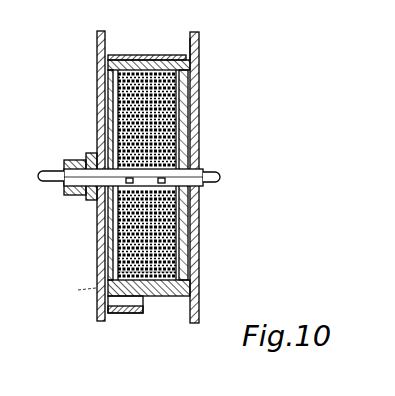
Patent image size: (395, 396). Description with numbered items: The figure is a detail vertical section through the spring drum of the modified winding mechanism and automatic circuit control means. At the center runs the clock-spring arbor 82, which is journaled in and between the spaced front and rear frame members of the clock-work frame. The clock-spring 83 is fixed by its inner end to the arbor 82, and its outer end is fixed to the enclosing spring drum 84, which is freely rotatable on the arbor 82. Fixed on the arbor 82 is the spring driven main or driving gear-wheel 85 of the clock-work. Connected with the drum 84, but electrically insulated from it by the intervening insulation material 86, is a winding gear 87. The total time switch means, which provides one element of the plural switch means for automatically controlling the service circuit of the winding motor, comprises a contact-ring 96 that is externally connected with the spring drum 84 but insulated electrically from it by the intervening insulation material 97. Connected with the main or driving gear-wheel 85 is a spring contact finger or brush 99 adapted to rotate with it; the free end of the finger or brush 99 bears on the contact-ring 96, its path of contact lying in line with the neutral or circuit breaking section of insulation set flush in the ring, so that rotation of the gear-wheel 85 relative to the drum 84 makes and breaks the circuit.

The clock-spring arbor 82 is at (73, 166).
The clock-spring 83 is at (144, 213).
The spring drum 84 is at (153, 267).
The main or driving gear-wheel 85 is at (89, 36).
The insulation material 86 is at (181, 47).
The winding gear 87 is at (206, 24).
The contact-ring 96 is at (150, 288).
The insulation material 97 is at (137, 50).
The spring contact finger or brush 99 is at (115, 305).